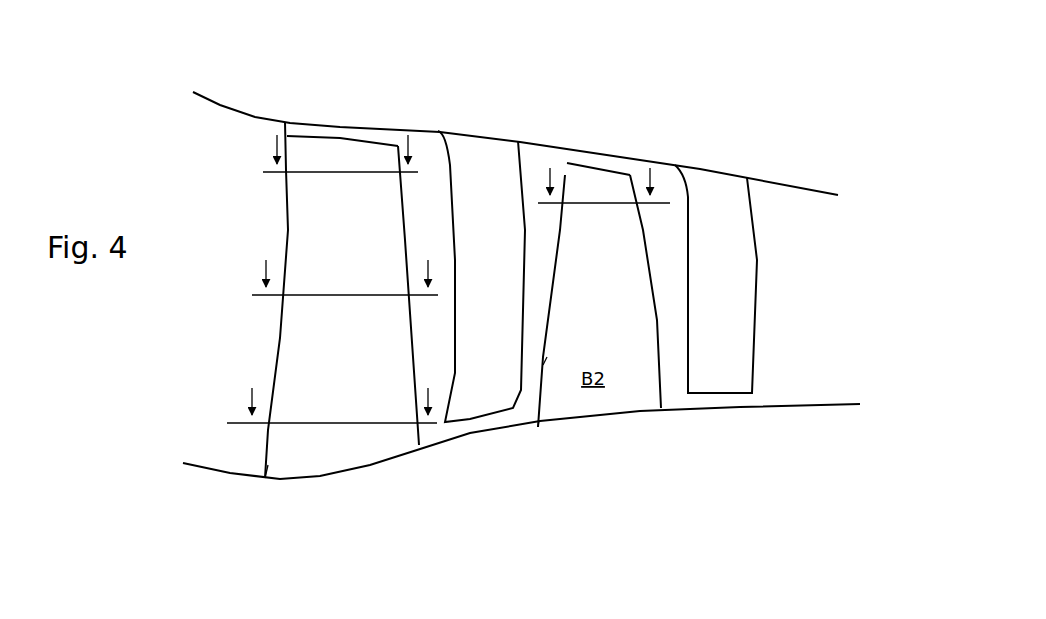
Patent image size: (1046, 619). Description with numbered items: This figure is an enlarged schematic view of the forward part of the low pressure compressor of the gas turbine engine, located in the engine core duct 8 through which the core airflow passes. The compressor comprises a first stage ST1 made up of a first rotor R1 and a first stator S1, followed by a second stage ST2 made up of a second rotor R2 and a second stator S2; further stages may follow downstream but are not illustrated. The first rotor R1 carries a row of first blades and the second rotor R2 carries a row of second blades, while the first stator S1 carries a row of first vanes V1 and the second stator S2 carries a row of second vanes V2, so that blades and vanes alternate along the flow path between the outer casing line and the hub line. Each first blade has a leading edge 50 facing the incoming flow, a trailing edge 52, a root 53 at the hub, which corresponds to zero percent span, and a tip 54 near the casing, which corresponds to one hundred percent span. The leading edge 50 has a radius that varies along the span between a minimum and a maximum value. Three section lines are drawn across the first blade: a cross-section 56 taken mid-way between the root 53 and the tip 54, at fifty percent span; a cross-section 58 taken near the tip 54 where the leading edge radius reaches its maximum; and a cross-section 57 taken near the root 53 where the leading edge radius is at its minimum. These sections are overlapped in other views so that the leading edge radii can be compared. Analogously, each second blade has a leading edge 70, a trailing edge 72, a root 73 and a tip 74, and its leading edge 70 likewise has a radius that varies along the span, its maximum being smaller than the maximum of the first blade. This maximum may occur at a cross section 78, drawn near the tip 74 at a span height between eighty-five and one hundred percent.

The engine core duct 8 is at (802, 268).
The leading edge 50 is at (317, 256).
The trailing edge 52 is at (408, 243).
The root 53 is at (265, 478).
The tip 54 is at (285, 122).
The cross-section 56 is at (343, 295).
The cross-section 57 is at (343, 423).
The cross-section 58 is at (343, 172).
The leading edge 70 is at (547, 357).
The trailing edge 72 is at (658, 327).
The root 73 is at (538, 427).
The tip 74 is at (565, 175).
The cross section 78 is at (597, 203).
The first stage ST1 is at (399, 103).
The second stage ST2 is at (677, 138).
The first stator S1 is at (487, 126).
The second stator S2 is at (730, 161).
The first rotor R1 is at (387, 490).
The second rotor R2 is at (612, 440).
The first vanes V1 is at (481, 276).
The second vanes V2 is at (716, 279).